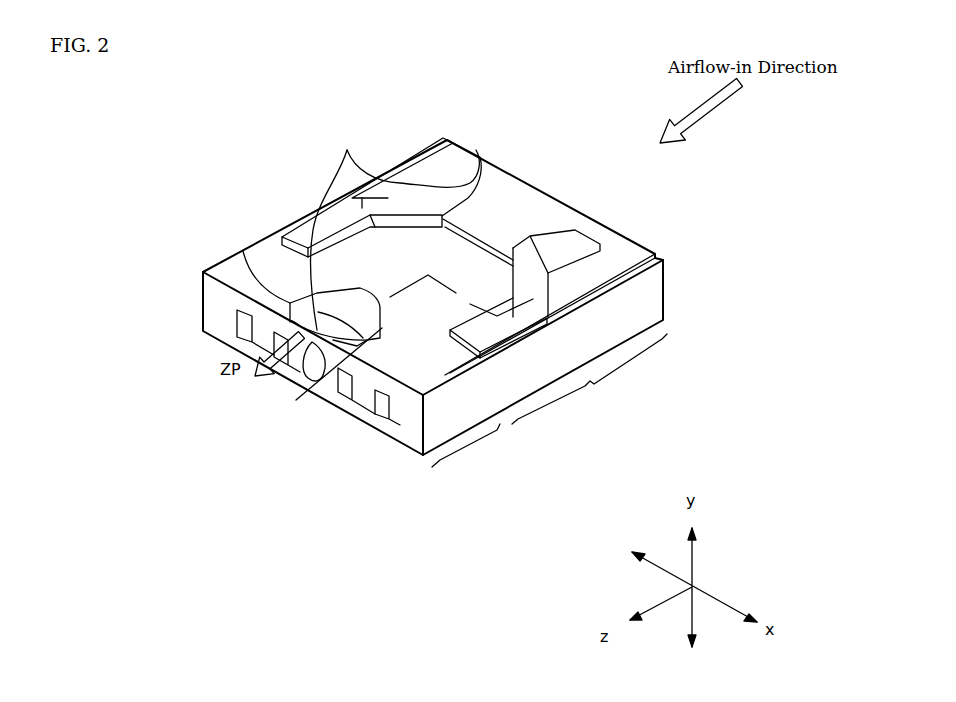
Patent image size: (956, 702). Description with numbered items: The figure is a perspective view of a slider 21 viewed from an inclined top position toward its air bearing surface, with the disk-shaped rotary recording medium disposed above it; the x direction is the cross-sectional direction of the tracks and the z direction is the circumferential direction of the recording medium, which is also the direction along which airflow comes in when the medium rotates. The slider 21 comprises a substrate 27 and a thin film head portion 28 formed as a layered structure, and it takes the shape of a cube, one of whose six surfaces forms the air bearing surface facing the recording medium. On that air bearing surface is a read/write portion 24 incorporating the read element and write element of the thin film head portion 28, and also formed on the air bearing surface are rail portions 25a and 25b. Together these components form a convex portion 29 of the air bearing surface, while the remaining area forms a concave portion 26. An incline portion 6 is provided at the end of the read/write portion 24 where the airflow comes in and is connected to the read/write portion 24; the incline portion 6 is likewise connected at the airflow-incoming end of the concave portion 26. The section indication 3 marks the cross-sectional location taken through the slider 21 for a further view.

The flow sensor unit 21 is at (279, 174).
The cover hood 24 is at (290, 302).
The first terminal lead 25a is at (474, 168).
The second terminal lead 25b is at (488, 171).
The curved guide surface 26 is at (262, 253).
The side wall 27 is at (589, 379).
The front wall 28 is at (466, 452).
The sensor element 29 is at (347, 150).
The droplet 6 is at (313, 387).
The section line III-III 3 is at (252, 380).